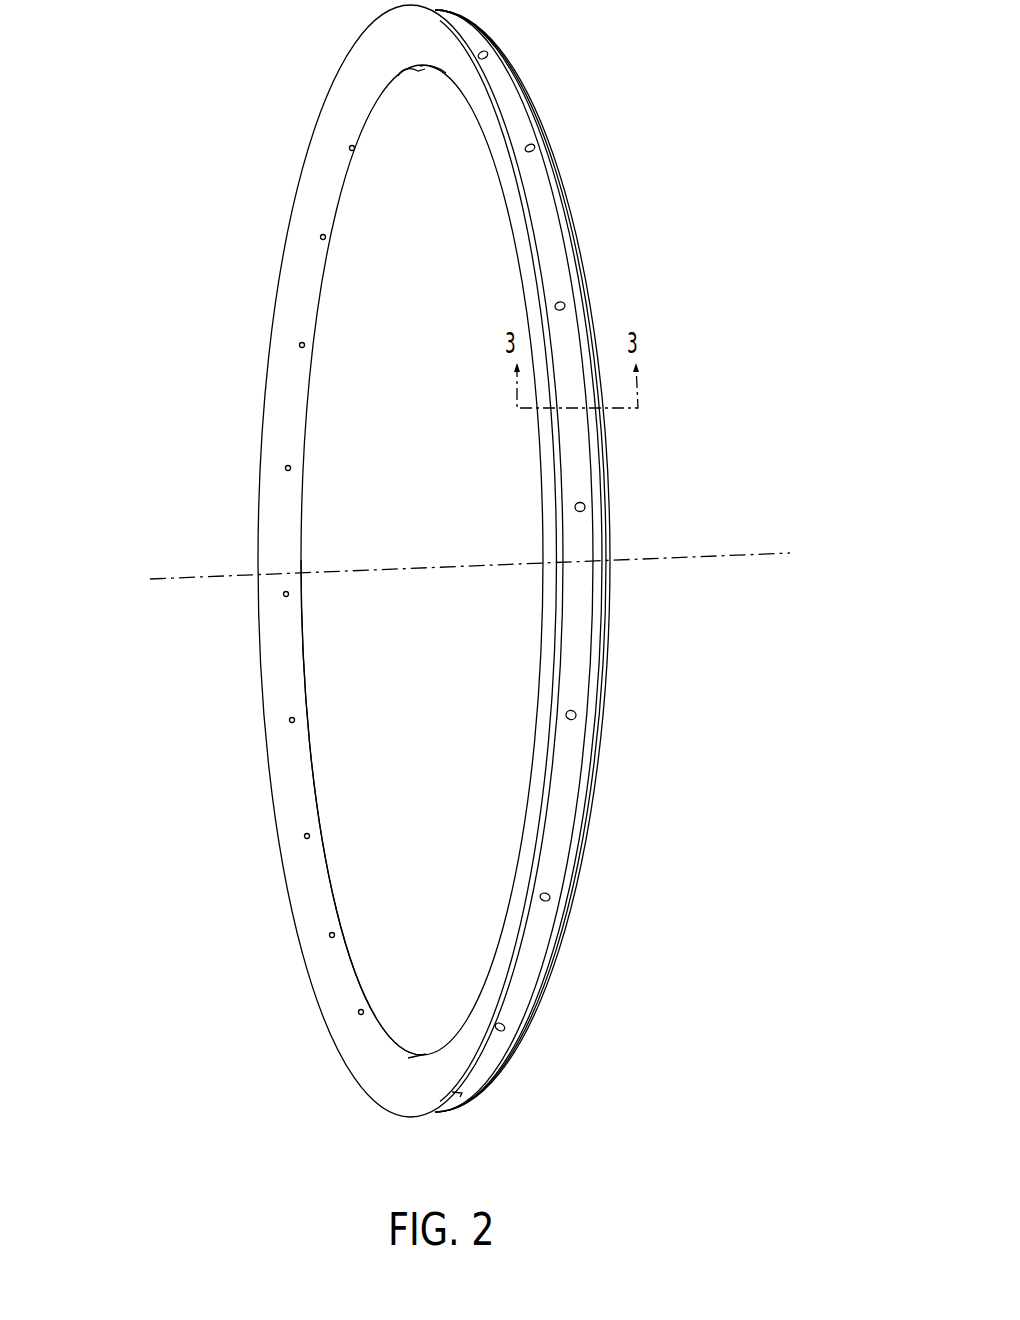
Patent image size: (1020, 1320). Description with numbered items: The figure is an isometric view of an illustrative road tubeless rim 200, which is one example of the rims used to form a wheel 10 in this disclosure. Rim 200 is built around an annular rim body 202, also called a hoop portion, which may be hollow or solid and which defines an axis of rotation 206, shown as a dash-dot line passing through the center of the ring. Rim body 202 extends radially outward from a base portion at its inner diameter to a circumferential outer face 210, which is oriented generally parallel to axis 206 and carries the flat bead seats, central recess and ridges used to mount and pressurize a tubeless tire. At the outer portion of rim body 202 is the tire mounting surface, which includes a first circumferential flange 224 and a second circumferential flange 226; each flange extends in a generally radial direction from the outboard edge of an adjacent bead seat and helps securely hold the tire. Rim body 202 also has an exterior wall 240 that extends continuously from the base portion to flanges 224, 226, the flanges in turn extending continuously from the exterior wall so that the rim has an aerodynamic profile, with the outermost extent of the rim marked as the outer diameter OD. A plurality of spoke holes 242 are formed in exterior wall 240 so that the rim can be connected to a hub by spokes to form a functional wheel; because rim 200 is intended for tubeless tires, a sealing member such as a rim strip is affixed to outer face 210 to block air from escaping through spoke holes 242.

The bicycle wheel 10 is at (335, 552).
The road tubeless rim 200 is at (146, 141).
The annular rim body 202 is at (275, 695).
The axis of rotation 206 is at (693, 562).
The circumferential outer face 210 is at (545, 190).
The first circumferential flange 224 is at (530, 194).
The second circumferential flange 226 is at (598, 203).
The exterior wall 240 is at (338, 1017).
The spoke holes 242 is at (326, 240).
The outer diameter OD is at (614, 732).